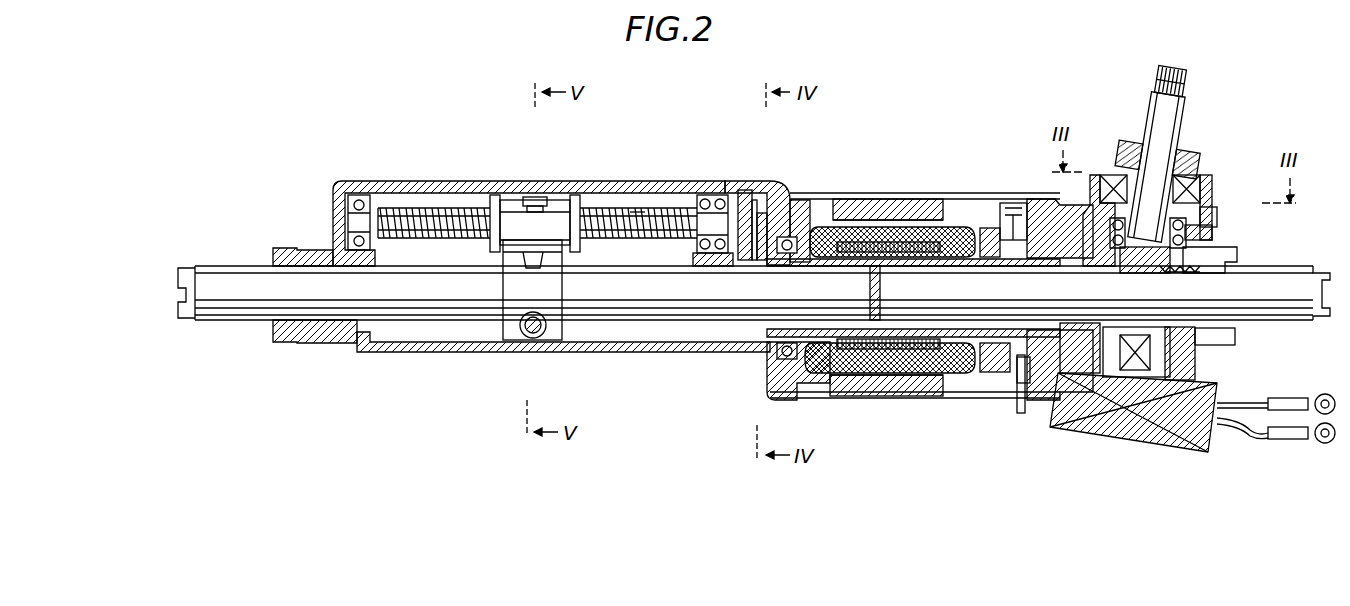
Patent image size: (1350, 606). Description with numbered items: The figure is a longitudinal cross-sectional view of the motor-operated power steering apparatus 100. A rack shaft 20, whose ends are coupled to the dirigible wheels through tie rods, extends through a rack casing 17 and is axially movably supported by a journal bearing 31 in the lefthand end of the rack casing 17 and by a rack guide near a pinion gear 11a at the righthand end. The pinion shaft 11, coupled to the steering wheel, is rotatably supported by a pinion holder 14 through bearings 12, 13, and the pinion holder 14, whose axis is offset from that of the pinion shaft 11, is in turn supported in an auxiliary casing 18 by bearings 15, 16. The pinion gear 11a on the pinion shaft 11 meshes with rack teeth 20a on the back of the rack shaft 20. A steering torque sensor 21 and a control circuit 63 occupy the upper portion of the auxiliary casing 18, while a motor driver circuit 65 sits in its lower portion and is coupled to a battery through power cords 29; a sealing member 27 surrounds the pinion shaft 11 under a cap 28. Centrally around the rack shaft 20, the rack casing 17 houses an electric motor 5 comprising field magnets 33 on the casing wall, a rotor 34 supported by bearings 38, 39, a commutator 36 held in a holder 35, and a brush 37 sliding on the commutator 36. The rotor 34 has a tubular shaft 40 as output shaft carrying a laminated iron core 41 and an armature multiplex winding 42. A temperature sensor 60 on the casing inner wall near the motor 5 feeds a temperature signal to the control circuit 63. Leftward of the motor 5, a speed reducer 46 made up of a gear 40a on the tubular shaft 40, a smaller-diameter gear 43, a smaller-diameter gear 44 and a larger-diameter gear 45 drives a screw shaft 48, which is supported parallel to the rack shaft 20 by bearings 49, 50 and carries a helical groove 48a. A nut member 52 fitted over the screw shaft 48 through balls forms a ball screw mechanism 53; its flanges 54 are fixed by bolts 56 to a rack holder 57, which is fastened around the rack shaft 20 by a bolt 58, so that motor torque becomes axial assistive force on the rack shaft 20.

The motor-operated power steering apparatus 100 is at (890, 108).
The electric motor 5 is at (901, 178).
The pinion shaft 11 is at (1175, 100).
The pinion gear 11a is at (1140, 265).
The bearing 12 is at (1205, 200).
The bearing 13 is at (1185, 355).
The pinion holder 14 is at (1215, 240).
The bearing 15 is at (1225, 258).
The bearing 16 is at (1195, 375).
The rack casing 17 is at (598, 182).
The auxiliary casing 18 is at (1215, 215).
The rack shaft 20 is at (1312, 270).
The rack teeth 20a is at (1180, 272).
The steering torque sensor 21 is at (1182, 210).
The sealing member 27 is at (1200, 175).
The cap 28 is at (1120, 150).
The power cords 29 is at (1290, 398).
The journal bearing 31 is at (297, 250).
The field magnets 33 is at (935, 199).
The rotor 34 is at (960, 205).
The holder 35 is at (990, 200).
The commutator 36 is at (990, 240).
The brush 37 is at (1015, 204).
The bearing 38 is at (1000, 355).
The bearing 39 is at (775, 385).
The tubular shaft 40 is at (960, 258).
The gear 40a is at (785, 353).
The laminated iron core 41 is at (925, 240).
The armature multiplex winding 42 is at (900, 240).
The smaller-diameter gear 43 is at (782, 189).
The smaller-diameter gear 44 is at (760, 213).
The larger-diameter gear 45 is at (745, 194).
The speed reducer 46 is at (800, 200).
The screw shaft 48 is at (670, 209).
The helical groove 48a is at (636, 212).
The bearing 49 is at (712, 198).
The bearing 50 is at (357, 195).
The nut member 52 is at (573, 197).
The ball screw mechanism 53 is at (492, 197).
The flanges 54 is at (560, 240).
The bolts 56 is at (533, 197).
The rack holder 57 is at (503, 300).
The bolt 58 is at (535, 330).
The temperature sensor 60 is at (1020, 400).
The control circuit 63 is at (1090, 178).
The motor driver circuit 65 is at (1135, 432).